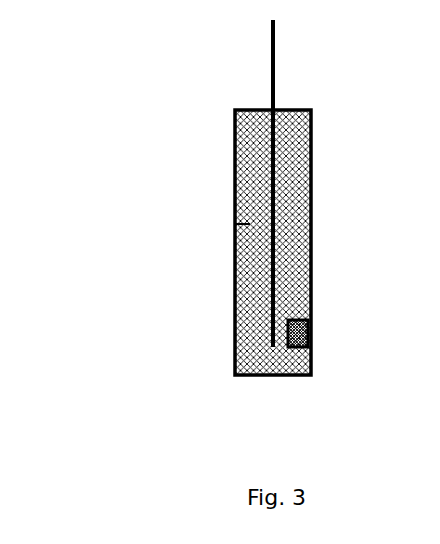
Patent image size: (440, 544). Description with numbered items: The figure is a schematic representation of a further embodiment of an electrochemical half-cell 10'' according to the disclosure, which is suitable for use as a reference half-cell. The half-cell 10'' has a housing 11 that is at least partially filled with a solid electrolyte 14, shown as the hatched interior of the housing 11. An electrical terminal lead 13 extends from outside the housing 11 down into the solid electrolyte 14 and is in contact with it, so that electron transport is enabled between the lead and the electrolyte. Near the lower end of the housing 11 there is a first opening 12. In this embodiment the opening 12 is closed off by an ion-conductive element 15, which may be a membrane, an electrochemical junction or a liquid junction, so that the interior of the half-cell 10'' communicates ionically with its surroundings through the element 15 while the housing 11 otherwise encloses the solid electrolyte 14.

The electrochemical half-cell 10'' is at (57, 79).
The housing 11 is at (235, 144).
The opening 12 is at (318, 329).
The electrical terminal lead 13 is at (272, 67).
The solid electrolyte 14 is at (236, 224).
The ion-conductive element 15 is at (332, 353).